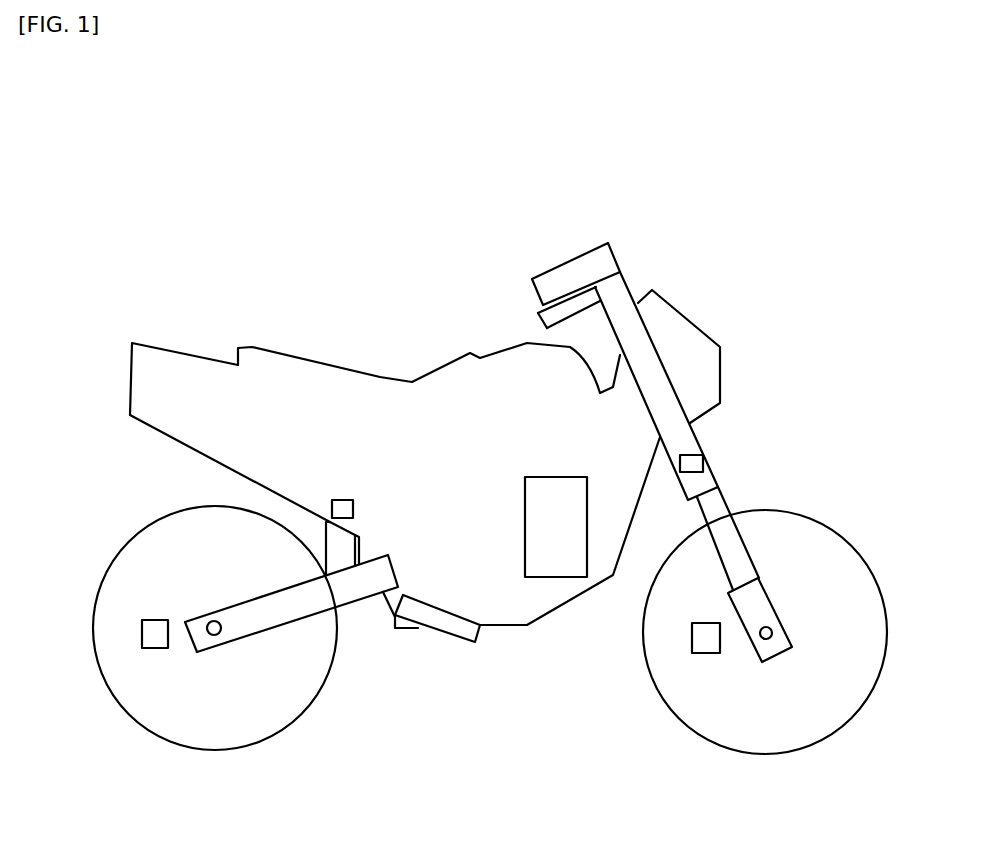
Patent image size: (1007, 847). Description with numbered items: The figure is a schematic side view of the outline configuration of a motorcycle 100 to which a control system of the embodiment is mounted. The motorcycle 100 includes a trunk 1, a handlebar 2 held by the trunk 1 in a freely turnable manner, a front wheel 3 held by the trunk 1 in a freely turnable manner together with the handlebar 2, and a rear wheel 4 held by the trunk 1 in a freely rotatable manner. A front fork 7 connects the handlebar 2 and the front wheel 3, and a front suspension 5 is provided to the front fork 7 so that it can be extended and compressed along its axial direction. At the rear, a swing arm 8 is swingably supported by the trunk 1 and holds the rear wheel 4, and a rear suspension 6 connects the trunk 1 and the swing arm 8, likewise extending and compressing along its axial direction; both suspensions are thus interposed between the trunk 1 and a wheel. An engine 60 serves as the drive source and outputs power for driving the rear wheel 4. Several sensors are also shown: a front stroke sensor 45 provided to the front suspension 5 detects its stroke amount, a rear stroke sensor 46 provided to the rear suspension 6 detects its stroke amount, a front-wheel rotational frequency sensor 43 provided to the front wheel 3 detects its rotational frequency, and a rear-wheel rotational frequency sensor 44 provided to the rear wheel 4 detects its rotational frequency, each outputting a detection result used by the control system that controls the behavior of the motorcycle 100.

The motorcycle 100 is at (875, 103).
The trunk 1 is at (320, 385).
The handlebar 2 is at (570, 272).
The front wheel 3 is at (765, 755).
The rear wheel 4 is at (215, 752).
The front suspension 5 is at (725, 510).
The rear suspension 6 is at (345, 560).
The front fork 7 is at (717, 476).
The swing arm 8 is at (265, 615).
The front-wheel rotational frequency sensor 43 is at (692, 642).
The rear-wheel rotational frequency sensor 44 is at (142, 633).
The front stroke sensor 45 is at (688, 453).
The rear stroke sensor 46 is at (341, 500).
The engine 60 is at (557, 565).